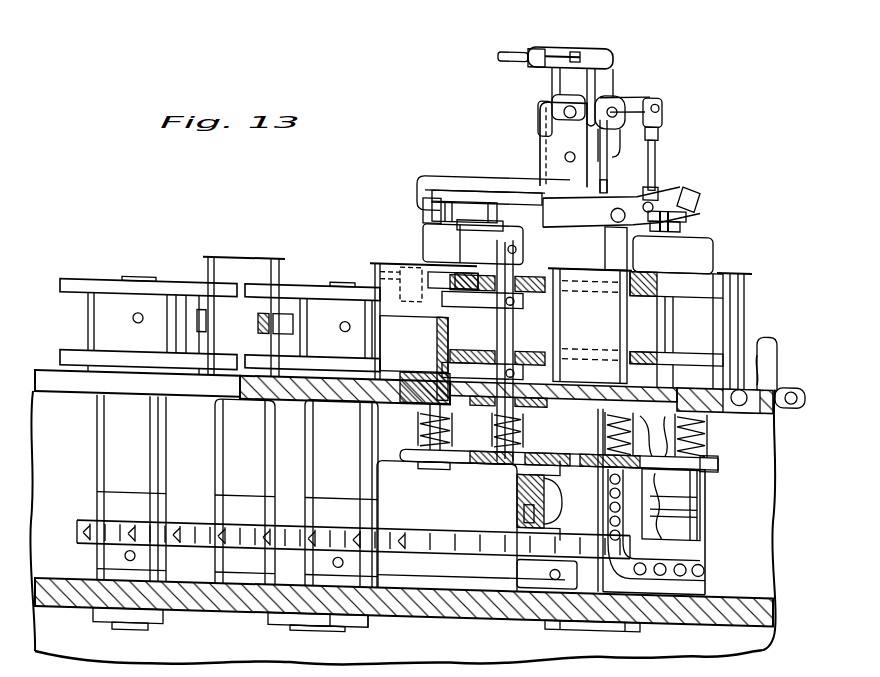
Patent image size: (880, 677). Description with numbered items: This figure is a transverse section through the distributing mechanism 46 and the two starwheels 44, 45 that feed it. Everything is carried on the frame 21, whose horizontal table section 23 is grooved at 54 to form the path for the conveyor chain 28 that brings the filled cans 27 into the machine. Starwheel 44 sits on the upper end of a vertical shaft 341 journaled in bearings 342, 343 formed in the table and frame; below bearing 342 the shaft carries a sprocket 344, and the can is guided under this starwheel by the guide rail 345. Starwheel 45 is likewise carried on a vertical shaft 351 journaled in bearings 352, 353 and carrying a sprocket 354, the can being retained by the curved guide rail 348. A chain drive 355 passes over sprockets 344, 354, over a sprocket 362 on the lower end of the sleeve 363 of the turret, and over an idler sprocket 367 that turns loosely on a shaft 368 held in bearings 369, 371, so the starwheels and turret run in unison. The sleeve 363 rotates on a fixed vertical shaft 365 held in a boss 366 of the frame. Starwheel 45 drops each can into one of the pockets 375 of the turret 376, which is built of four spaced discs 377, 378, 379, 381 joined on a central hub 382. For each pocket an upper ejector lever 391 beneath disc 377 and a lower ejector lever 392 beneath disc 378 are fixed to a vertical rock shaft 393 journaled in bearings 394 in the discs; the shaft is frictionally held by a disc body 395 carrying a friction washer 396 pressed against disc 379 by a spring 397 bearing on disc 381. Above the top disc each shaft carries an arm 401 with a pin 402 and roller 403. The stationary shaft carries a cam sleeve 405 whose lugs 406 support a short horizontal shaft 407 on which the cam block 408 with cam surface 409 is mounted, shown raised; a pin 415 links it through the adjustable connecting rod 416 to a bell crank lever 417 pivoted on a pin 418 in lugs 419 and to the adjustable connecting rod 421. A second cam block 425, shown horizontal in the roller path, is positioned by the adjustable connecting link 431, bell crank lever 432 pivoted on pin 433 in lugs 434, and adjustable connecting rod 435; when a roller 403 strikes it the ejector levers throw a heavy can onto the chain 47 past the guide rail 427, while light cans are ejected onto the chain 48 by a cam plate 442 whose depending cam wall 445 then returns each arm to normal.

The frame 21 is at (465, 604).
The horizontal table section 23 is at (47, 372).
The filled cans 27 is at (750, 253).
The conveyor chain 28 is at (683, 503).
The starwheel 44 is at (100, 277).
The starwheel 45 is at (305, 277).
The distributing mechanism 46 is at (744, 241).
The conveyor chain 47 is at (705, 485).
The chain 48 is at (656, 525).
The groove 54 is at (770, 360).
The vertical shaft 341 is at (137, 273).
The bearing 342 is at (131, 488).
The bearing 343 is at (95, 618).
The sprocket 344 is at (131, 505).
The guide rail 345 is at (258, 316).
The curved guide rail 348 is at (207, 315).
The vertical shaft 351 is at (344, 273).
The bearing 352 is at (341, 494).
The bearing 353 is at (370, 615).
The sprocket 354 is at (341, 512).
The chain drive 355 is at (422, 526).
The sprocket 362 is at (548, 492).
The sleeve 363 is at (518, 480).
The fixed vertical shaft 365 is at (523, 500).
The boss 366 is at (515, 566).
The idler sprocket 367 is at (282, 504).
The vertical shaft 368 is at (295, 622).
The bearing 369 is at (280, 425).
The bearing 371 is at (268, 615).
The pockets 375 is at (415, 267).
The turret 376 is at (659, 257).
The disc 377 is at (542, 268).
The disc 378 is at (545, 340).
The disc 379 is at (575, 383).
The disc 381 is at (562, 437).
The central hub 382 is at (556, 460).
The upper ejector lever 391 is at (452, 290).
The lower ejector lever 392 is at (758, 305).
The vertical rock shaft 393 is at (514, 306).
The bearings 394 is at (480, 270).
The disc body 395 is at (450, 393).
The friction washer 396 is at (528, 394).
The spring 397 is at (451, 437).
The arm 401 is at (480, 230).
The pin 402 is at (485, 186).
The roller 403 is at (497, 199).
The cam sleeve 405 is at (563, 144).
The lugs 406 is at (621, 207).
The short horizontal shaft 407 is at (618, 191).
The cam block 408 is at (653, 186).
The cam surface 409 is at (697, 183).
The pin 415 is at (660, 172).
The adjustable connecting rod 416 is at (664, 112).
The bell crank lever 417 is at (612, 63).
The pin 418 is at (619, 87).
The lugs 419 is at (622, 116).
The adjustable connecting rod 421 is at (562, 54).
The second cam block 425 is at (681, 208).
The guide rail 427 is at (768, 336).
The adjustable connecting link 431 is at (603, 149).
The bell crank lever 432 is at (560, 65).
The pin 433 is at (565, 87).
The lugs 434 is at (539, 98).
The adjustable connecting rod 435 is at (514, 40).
The cam plate 442 is at (460, 164).
The cam wall 445 is at (421, 190).